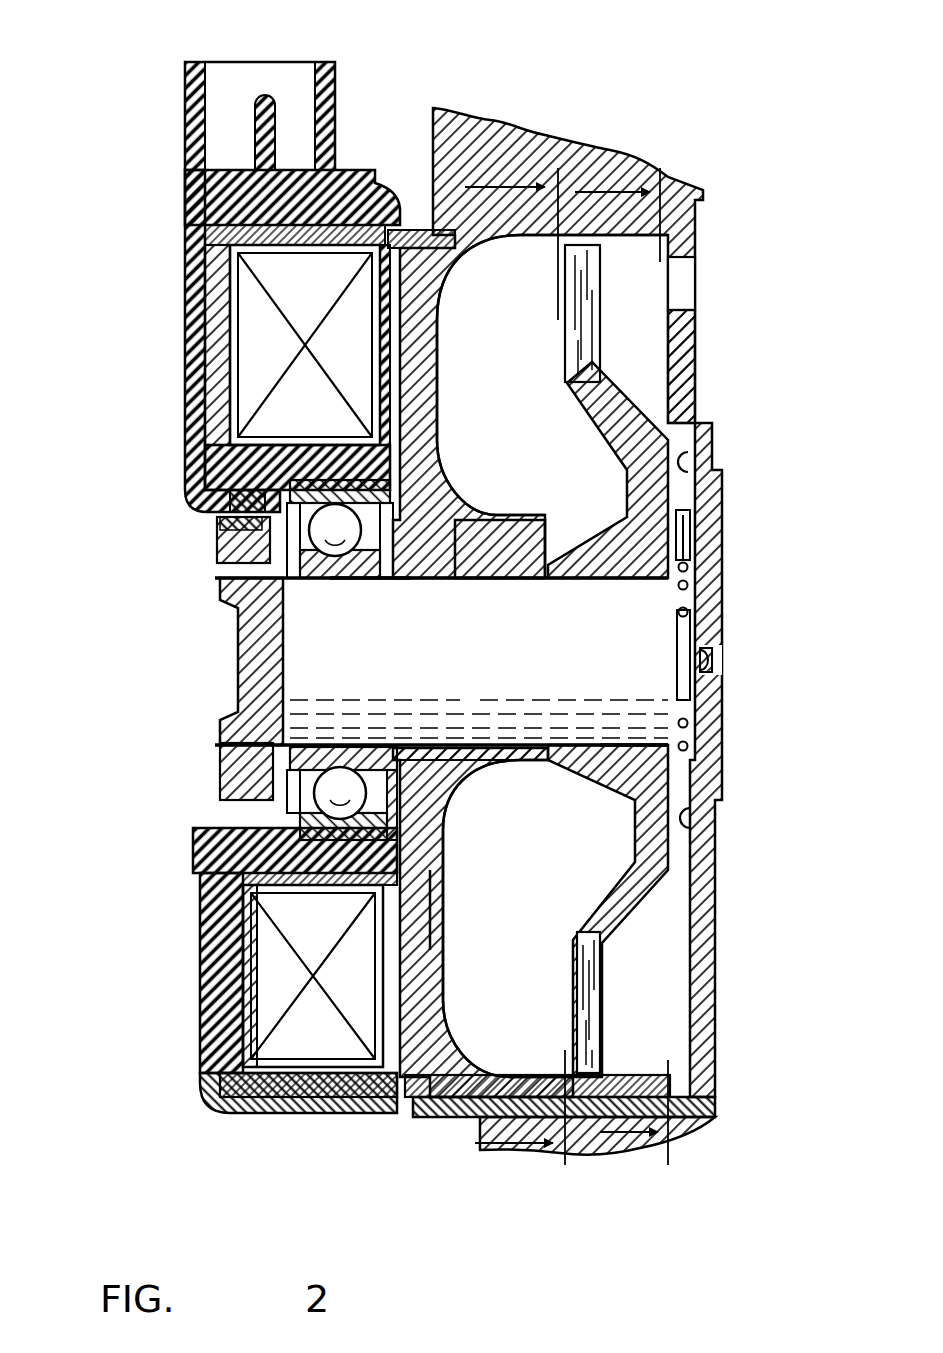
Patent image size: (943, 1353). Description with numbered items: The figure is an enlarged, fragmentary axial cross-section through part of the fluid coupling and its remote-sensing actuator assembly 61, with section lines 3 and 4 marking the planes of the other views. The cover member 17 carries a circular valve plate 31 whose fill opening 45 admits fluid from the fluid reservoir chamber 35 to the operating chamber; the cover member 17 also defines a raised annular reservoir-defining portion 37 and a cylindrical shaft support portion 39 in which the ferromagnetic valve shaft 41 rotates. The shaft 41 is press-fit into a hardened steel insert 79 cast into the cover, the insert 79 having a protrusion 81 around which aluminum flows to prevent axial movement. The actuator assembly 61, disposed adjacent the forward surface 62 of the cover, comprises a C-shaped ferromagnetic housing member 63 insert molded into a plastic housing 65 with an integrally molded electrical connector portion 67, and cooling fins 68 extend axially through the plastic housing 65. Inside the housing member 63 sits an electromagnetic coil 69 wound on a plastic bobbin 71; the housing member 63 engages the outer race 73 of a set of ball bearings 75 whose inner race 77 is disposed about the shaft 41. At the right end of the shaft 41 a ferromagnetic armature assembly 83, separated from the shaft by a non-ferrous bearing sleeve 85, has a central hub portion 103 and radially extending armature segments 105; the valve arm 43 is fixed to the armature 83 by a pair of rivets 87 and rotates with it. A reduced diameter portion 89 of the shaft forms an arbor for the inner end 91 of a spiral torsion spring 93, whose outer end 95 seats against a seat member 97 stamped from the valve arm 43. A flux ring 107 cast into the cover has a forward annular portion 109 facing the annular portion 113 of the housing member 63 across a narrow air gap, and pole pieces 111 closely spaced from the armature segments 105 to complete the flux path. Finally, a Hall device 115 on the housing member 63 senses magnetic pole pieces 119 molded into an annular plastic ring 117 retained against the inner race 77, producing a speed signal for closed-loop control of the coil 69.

The cover member 17 is at (445, 108).
The circular valve plate 31 is at (715, 895).
The fluid reservoir chamber 35 is at (552, 375).
The reservoir-defining portion 37 is at (432, 985).
The shaft support portion 39 is at (510, 550).
The valve shaft 41 is at (441, 661).
The valve arm 43 is at (690, 368).
The fill opening 45 is at (690, 290).
The actuator assembly 61 is at (246, 341).
The forward surface 62 is at (432, 905).
The ferromagnetic housing member 63 is at (274, 1002).
The plastic housing 65 is at (195, 340).
The electrical connector portion 67 is at (288, 62).
The cooling fins 68 is at (200, 937).
The electromagnetic coil 69 is at (250, 372).
The plastic bobbin 71 is at (235, 1025).
The outer race 73 is at (400, 825).
The set of ball bearings 75 is at (340, 785).
The inner race 77 is at (360, 578).
The steel insert 79 is at (430, 748).
The protrusion 81 is at (398, 530).
The armature assembly 83 is at (583, 888).
The bearing sleeve 85 is at (630, 745).
The rivets 87 is at (690, 462).
The reduced diameter portion 89 is at (665, 636).
The inner end 91 is at (702, 658).
The torsion spring 93 is at (688, 724).
The outer end 95 is at (690, 513).
The seat member 97 is at (690, 540).
The central hub portion 103 is at (635, 470).
The armature segments 105 is at (575, 332).
The flux ring 107 is at (442, 1112).
The annular portion 109 is at (430, 230).
The pole pieces 111 is at (540, 1080).
The annular portion 113 is at (372, 1085).
The Hall device 115 is at (235, 492).
The annular plastic ring 117 is at (222, 762).
The magnetic pole pieces 119 is at (220, 530).
The section line 3- 3 is at (618, 659).
The section line 4- 4 is at (513, 664).